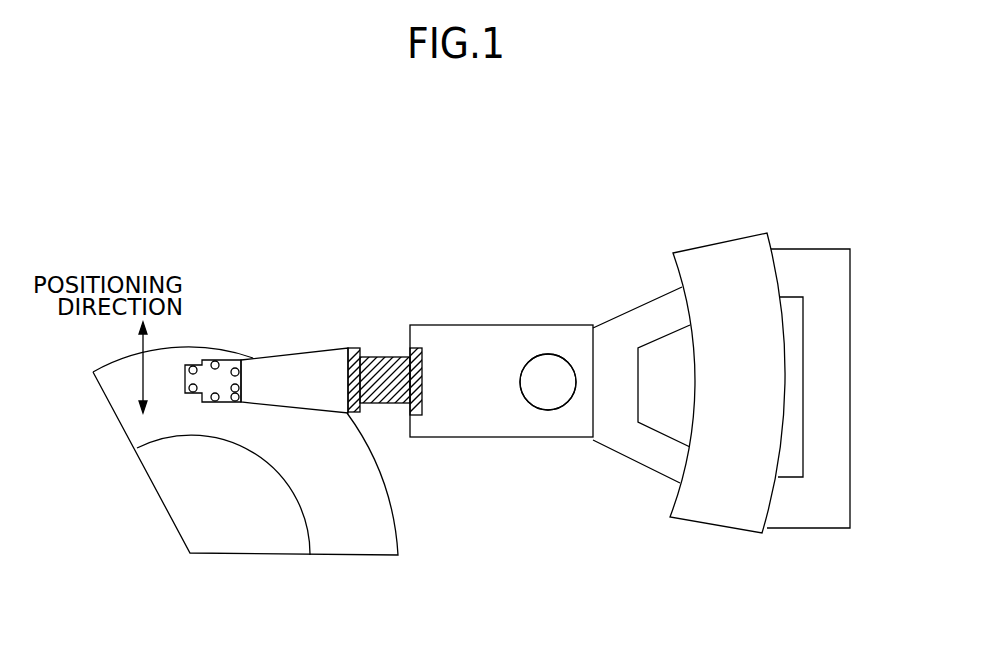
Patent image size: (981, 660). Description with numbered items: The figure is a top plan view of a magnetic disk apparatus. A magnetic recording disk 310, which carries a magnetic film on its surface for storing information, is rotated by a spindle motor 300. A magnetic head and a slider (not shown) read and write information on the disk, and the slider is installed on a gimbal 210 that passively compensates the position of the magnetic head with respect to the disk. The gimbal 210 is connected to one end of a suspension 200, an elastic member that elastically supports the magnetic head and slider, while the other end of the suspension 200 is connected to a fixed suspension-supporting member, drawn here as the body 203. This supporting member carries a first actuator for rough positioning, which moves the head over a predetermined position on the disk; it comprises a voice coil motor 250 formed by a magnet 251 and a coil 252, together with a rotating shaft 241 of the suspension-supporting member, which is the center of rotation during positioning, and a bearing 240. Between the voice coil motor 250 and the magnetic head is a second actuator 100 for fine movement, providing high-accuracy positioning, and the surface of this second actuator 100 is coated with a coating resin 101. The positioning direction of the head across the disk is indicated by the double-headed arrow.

The second actuator 100 is at (388, 367).
The coating resin 101 is at (361, 358).
The suspension 200 is at (300, 365).
The drive housing 203 is at (462, 342).
The gimbal 210 is at (225, 368).
The bearing 240 is at (548, 355).
The rotating shaft of suspension-supporting member 241 is at (548, 402).
The voice coil motor 250 is at (681, 247).
The magnet 251 is at (738, 248).
The coil 252 is at (825, 515).
The spindle motor 300 is at (237, 533).
The magnetic recording disk 310 is at (380, 533).